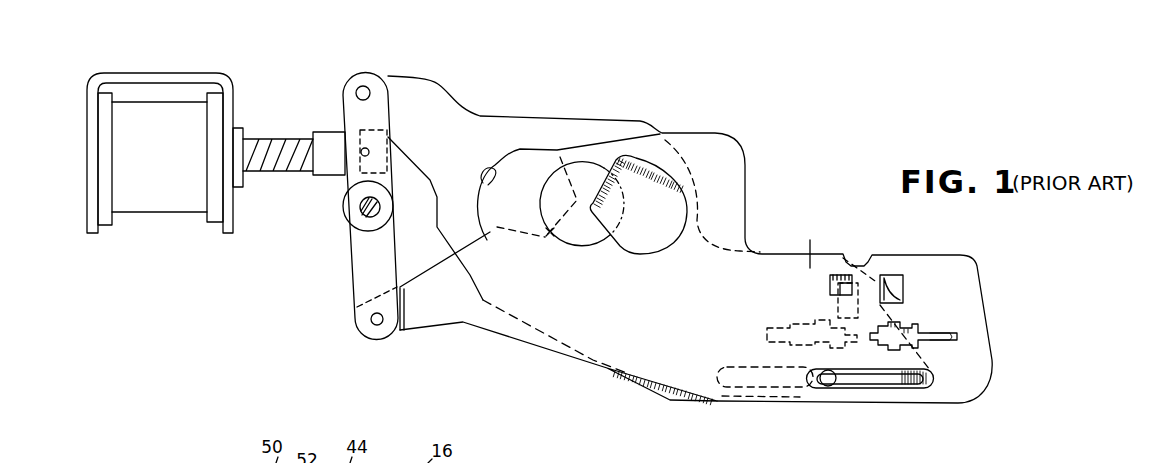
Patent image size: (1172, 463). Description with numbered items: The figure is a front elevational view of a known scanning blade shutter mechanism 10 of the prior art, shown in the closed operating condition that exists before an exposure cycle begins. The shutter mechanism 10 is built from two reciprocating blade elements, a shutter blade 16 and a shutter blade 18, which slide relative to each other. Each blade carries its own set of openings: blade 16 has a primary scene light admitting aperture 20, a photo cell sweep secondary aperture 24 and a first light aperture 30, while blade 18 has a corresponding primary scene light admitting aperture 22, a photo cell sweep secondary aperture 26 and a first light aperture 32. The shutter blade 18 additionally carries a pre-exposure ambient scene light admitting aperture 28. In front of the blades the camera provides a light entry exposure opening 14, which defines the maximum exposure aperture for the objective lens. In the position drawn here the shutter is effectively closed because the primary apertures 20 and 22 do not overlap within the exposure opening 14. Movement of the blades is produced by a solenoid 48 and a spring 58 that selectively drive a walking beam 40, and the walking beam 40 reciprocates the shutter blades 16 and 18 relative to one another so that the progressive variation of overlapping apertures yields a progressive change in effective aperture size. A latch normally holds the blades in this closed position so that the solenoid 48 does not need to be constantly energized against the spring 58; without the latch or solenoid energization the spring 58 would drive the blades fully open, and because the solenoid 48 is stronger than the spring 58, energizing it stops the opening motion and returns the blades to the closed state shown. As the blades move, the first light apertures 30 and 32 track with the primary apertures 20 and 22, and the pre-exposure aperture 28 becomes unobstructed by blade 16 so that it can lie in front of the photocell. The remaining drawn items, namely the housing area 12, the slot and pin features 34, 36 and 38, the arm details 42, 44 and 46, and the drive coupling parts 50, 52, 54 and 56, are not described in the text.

The shutter mechanism 10 is at (835, 100).
The housing 12 is at (852, 194).
The light entry exposure opening 14 is at (571, 250).
The shutter blade element 16 is at (497, 117).
The shutter blade element 18 is at (435, 333).
The primary scene light admitting aperture 20 is at (482, 182).
The primary scene light admitting aperture 22 is at (656, 252).
The photo cell sweep secondary aperture 24 is at (767, 334).
The photo cell sweep secondary aperture 26 is at (957, 337).
The pre-exposure ambient scene light admitting aperture 28 is at (810, 240).
The first light aperture 30 is at (830, 290).
The first light aperture 32 is at (903, 284).
The pivot pin 34 is at (832, 384).
The hidden slot 36 is at (737, 383).
The slot 38 is at (913, 384).
The walking beam 40 is at (348, 288).
The pivot hub 42 is at (364, 213).
The upper hole 44 is at (370, 87).
The lower hole 46 is at (375, 324).
The solenoid 48 is at (157, 242).
The spring 50 is at (256, 137).
The block 52 is at (330, 176).
The hidden detent 54 is at (350, 130).
The pin 56 is at (378, 150).
The spring 58 is at (271, 173).